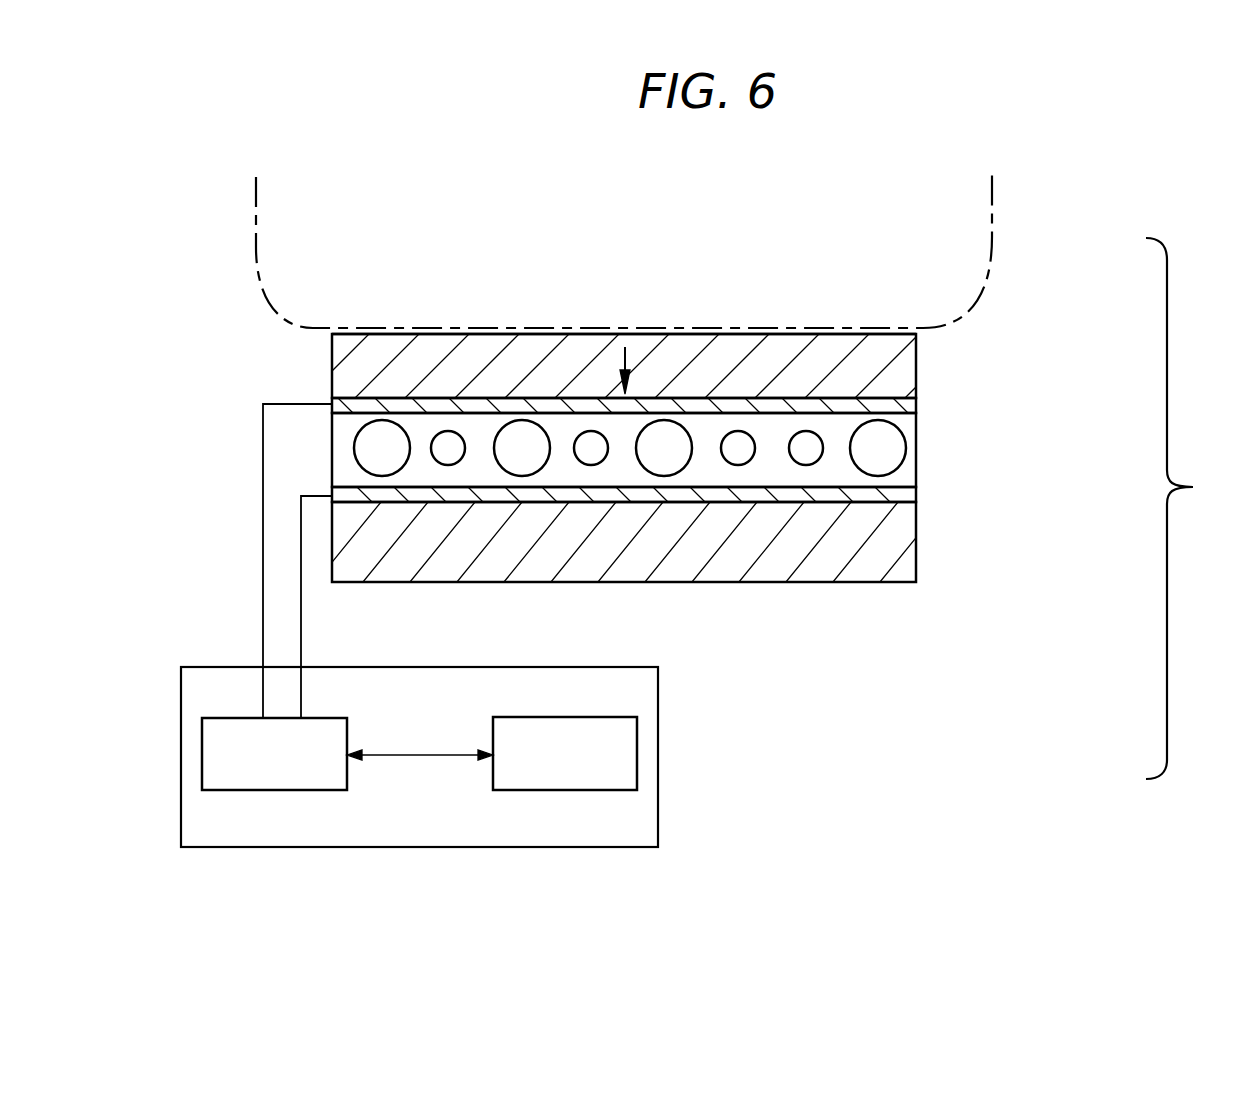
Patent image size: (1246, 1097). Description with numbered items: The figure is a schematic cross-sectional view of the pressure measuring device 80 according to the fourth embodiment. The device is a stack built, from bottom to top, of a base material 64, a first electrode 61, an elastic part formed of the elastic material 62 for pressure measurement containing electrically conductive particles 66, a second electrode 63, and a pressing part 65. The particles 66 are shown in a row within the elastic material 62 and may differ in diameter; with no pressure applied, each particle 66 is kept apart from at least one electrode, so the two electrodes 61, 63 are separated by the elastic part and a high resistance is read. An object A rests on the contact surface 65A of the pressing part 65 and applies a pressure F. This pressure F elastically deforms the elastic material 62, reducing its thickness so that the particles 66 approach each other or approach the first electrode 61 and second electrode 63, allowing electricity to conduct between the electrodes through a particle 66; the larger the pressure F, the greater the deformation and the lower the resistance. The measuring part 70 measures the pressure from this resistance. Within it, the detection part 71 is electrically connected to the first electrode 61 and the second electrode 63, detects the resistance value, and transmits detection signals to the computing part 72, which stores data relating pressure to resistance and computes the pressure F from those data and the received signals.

The pressing part 65 is at (902, 365).
The contact surface 65A is at (860, 328).
The second electrode 63 is at (903, 401).
The elastic material for pressure measurement 62 is at (908, 470).
The electrically conductive particle 66 is at (895, 447).
The first electrode 61 is at (905, 495).
The base material 64 is at (893, 543).
The pressure measuring device 80 is at (1186, 508).
The measuring part 70 is at (420, 847).
The detection part 71 is at (285, 790).
The computing part 72 is at (553, 790).
The object A is at (992, 226).
The pressure F is at (635, 368).